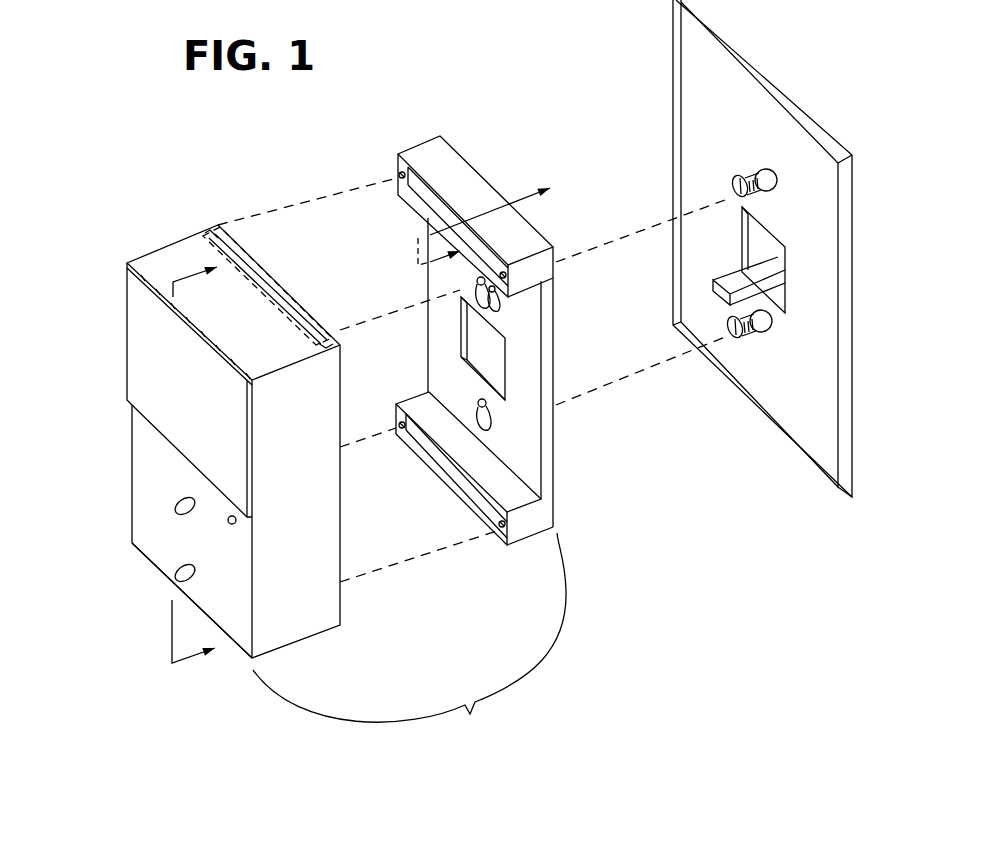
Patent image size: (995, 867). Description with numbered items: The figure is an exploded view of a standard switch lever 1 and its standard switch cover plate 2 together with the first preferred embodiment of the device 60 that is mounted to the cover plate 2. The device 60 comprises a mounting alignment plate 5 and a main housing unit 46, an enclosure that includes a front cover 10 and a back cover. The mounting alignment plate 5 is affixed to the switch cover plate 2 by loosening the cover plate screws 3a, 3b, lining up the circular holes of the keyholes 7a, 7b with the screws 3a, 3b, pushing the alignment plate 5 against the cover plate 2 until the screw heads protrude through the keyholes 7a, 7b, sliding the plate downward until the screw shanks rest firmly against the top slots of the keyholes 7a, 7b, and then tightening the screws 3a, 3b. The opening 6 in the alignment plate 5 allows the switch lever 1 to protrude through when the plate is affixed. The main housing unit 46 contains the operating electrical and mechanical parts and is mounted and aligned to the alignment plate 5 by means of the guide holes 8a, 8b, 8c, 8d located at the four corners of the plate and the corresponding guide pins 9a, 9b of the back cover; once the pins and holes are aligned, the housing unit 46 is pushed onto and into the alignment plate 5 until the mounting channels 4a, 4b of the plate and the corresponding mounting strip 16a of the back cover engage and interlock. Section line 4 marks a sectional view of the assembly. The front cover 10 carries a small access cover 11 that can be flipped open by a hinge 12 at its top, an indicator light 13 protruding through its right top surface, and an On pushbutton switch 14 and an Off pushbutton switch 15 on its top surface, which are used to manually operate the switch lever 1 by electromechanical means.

The switch lever 1 is at (728, 270).
The switch cover plate 2 is at (806, 455).
The switch cover plate screw 3a is at (762, 196).
The switch cover plate screw 3b is at (760, 333).
The section line 4- 4 is at (183, 465).
The mounting channel 4a is at (428, 222).
The mounting channel 4b is at (445, 486).
The mounting alignment plate 5 is at (557, 455).
The opening 6 is at (506, 374).
The keyhole 7a is at (489, 303).
The keyhole 7b is at (490, 420).
The guide hole 8a is at (507, 280).
The guide hole 8b is at (398, 177).
The guide hole 8c is at (500, 530).
The guide hole 8d is at (398, 430).
The guide pin 9a is at (332, 335).
The guide pin 9b is at (226, 224).
The front cover 10 is at (143, 556).
The access cover 11 is at (130, 345).
The hinge 12 is at (127, 262).
The indicator light 13 is at (236, 524).
The On pushbutton switch 14 is at (180, 500).
The Off pushbutton switch 15 is at (176, 577).
The mounting strip 16a is at (272, 271).
The main housing unit 46 is at (314, 612).
The device 60 is at (409, 646).